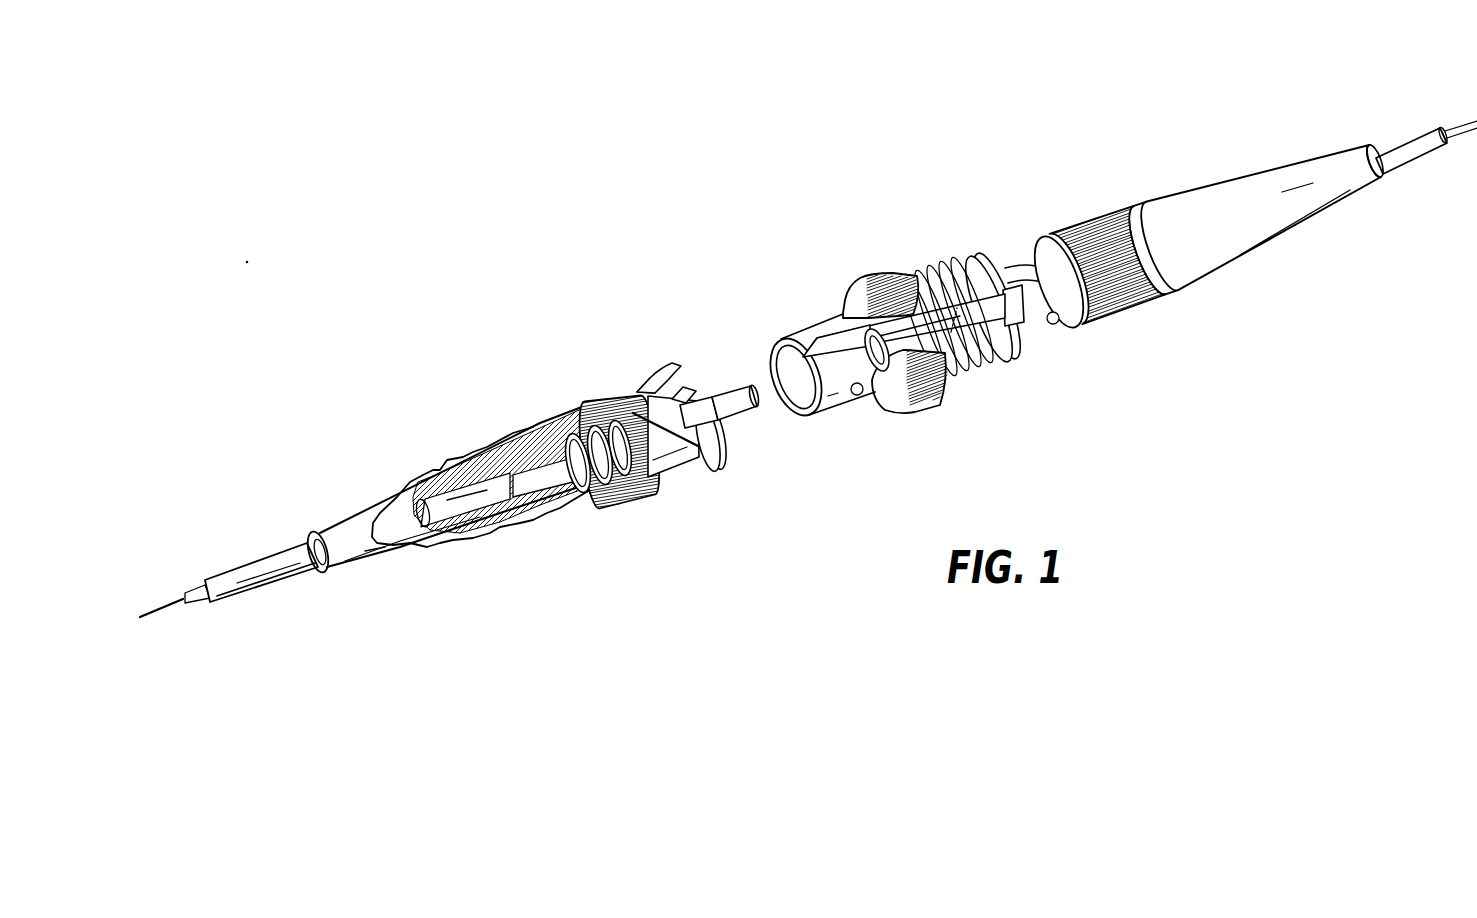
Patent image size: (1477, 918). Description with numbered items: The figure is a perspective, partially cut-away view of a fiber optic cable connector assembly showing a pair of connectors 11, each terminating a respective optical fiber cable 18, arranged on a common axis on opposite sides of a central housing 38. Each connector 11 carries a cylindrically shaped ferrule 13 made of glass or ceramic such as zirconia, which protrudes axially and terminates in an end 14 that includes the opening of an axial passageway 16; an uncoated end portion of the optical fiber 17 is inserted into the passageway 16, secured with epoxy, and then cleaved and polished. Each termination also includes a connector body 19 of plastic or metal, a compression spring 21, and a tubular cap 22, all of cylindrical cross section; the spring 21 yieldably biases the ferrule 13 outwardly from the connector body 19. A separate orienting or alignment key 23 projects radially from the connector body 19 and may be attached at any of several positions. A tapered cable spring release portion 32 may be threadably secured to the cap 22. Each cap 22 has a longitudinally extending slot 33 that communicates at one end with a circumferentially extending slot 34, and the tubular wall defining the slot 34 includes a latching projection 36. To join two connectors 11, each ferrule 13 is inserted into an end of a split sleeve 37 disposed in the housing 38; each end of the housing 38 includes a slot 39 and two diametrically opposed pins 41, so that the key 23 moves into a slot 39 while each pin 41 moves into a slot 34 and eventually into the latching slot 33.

The connector 11 is at (323, 415).
The ferrule 13 is at (704, 400).
The end 14 is at (757, 403).
The axial passageway 16 is at (953, 335).
The optical fiber 17 is at (178, 608).
The optical fiber cable 18 is at (258, 570).
The connector body 19 is at (697, 403).
The compression spring 21 is at (610, 497).
The tubular cap 22 is at (661, 382).
The alignment key 23 is at (676, 392).
The tapered cable spring release portion 32 is at (1363, 150).
The longitudinally extending slot 33 is at (647, 389).
The circumferentially extending slot 34 is at (671, 437).
The latching projection 36 is at (706, 420).
The split sleeve 37 is at (988, 360).
The housing 38 is at (830, 410).
The slot 39 is at (821, 352).
The pin 41 is at (857, 395).